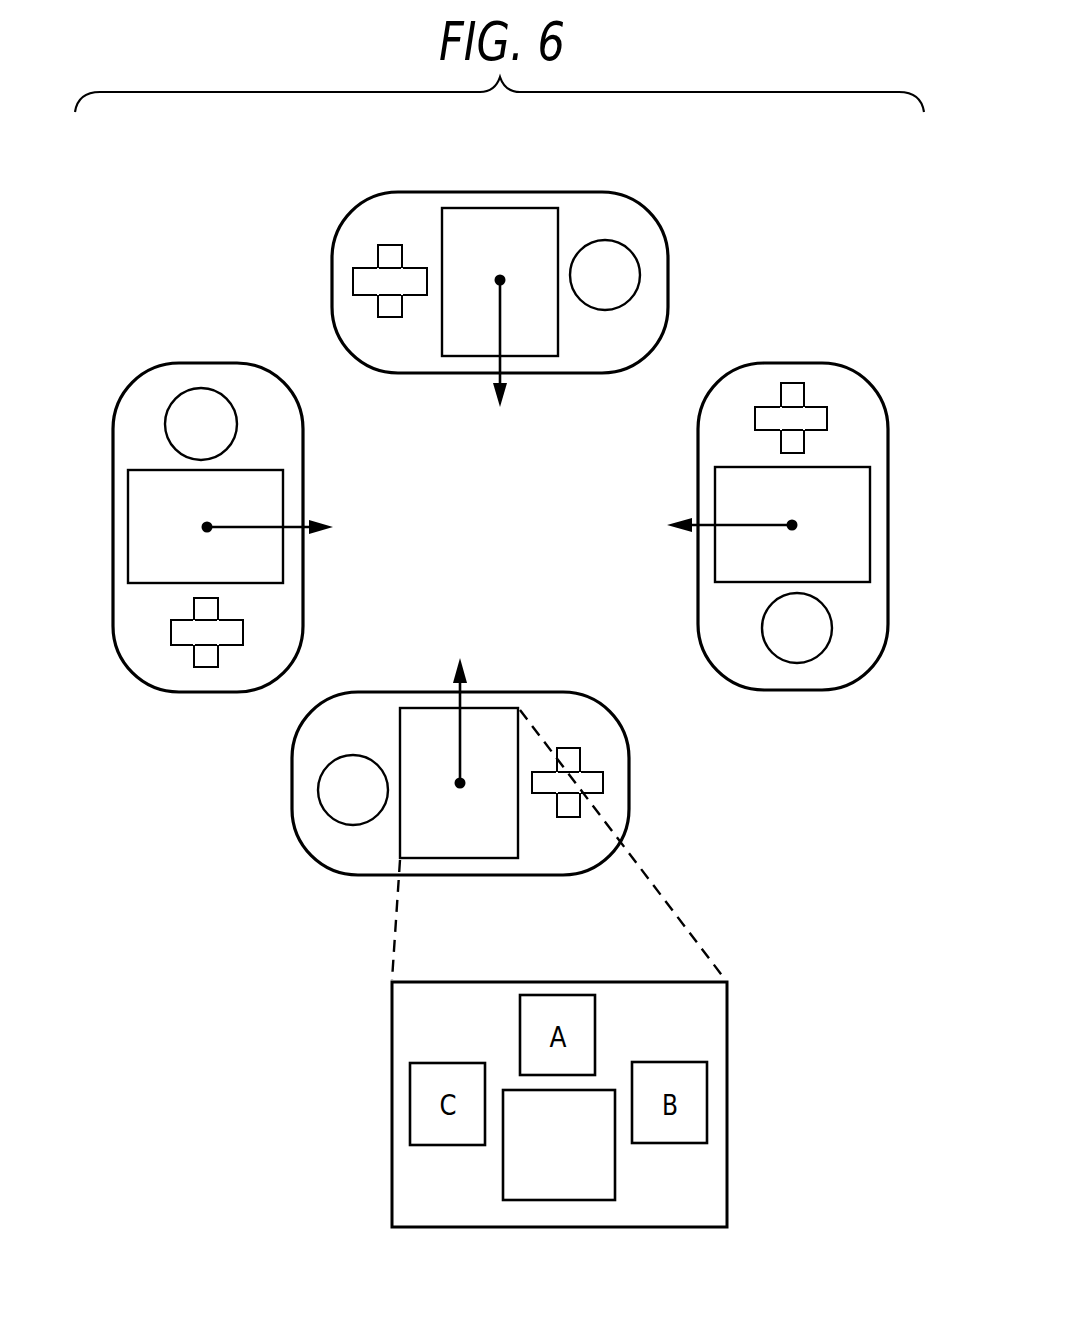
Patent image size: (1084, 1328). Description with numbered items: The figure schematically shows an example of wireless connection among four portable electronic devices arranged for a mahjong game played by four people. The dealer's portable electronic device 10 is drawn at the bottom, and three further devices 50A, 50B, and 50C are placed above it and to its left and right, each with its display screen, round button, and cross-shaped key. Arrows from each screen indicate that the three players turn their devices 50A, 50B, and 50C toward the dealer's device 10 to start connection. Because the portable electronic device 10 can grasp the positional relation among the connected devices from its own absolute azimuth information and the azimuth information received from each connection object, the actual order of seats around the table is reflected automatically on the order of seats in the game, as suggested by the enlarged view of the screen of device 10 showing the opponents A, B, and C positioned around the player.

The portable electronic device 10 is at (272, 783).
The other portable electronic device A 50A is at (670, 210).
The other portable electronic device B 50B is at (837, 350).
The other portable electronic device C 50C is at (160, 352).